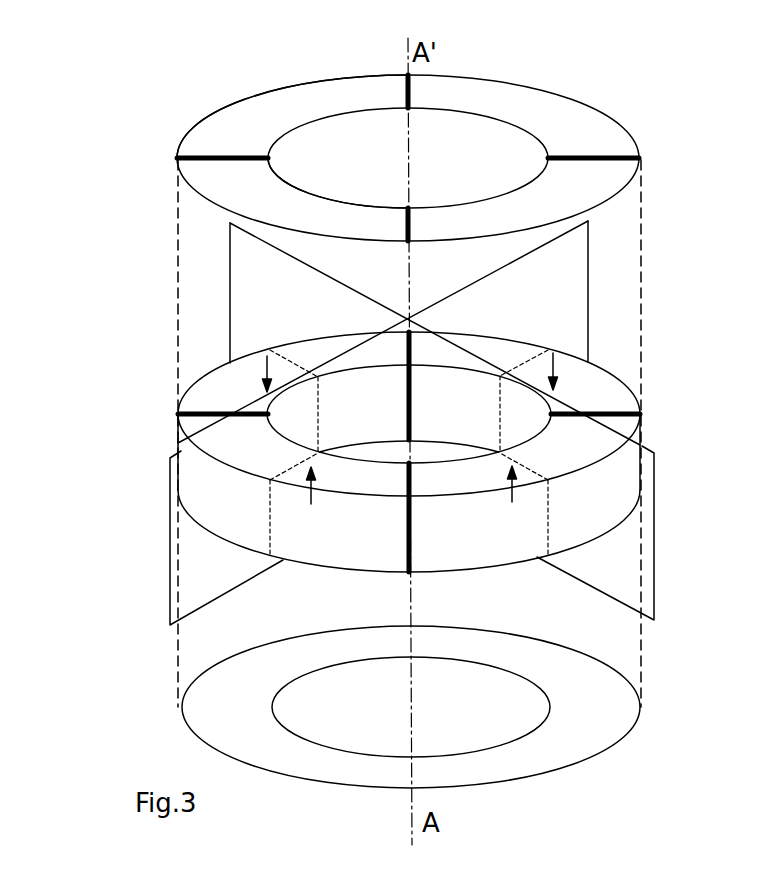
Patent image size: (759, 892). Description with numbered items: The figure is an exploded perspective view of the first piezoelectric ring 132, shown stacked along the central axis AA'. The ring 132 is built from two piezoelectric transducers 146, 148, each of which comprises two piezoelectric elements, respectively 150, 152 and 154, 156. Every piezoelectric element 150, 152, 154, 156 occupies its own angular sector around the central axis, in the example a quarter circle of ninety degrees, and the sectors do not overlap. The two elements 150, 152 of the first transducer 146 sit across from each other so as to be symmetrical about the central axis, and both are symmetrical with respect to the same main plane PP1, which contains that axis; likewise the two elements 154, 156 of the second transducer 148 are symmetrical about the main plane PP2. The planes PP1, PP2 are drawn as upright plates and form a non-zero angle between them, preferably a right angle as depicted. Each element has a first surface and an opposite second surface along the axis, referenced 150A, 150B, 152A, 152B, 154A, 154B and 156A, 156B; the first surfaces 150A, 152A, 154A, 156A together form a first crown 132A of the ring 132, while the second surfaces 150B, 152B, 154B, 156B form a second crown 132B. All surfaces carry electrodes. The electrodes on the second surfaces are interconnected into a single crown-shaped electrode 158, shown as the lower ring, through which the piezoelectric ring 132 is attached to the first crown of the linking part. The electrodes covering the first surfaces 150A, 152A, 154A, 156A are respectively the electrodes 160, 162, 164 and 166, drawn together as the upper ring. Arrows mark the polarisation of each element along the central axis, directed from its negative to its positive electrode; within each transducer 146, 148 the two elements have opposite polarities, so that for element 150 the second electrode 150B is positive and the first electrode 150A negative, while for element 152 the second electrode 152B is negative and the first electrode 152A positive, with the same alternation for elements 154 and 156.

The first piezoelectric ring 132 is at (140, 274).
The first crown 132A is at (218, 393).
The second crown 132B is at (202, 530).
The piezoelectric transducer 146 is at (606, 343).
The piezoelectric transducer 148 is at (253, 328).
The piezoelectric element 150 is at (448, 373).
The first surface 150A is at (503, 350).
The second surface 150B is at (446, 455).
The piezoelectric element 152 is at (249, 530).
The first surface 152A is at (350, 478).
The second surface 152B is at (336, 580).
The piezoelectric element 154 is at (332, 396).
The first surface 154A is at (310, 357).
The second surface 154B is at (378, 455).
The piezoelectric element 156 is at (517, 537).
The first surface 156A is at (437, 478).
The second surface 156B is at (471, 580).
The crown-shaped electrode 158 is at (628, 740).
The electrode 160 is at (553, 92).
The electrode 162 is at (345, 238).
The electrode 164 is at (241, 103).
The electrode 166 is at (465, 242).
The main plane PP1 is at (168, 592).
The main plane PP2 is at (655, 528).